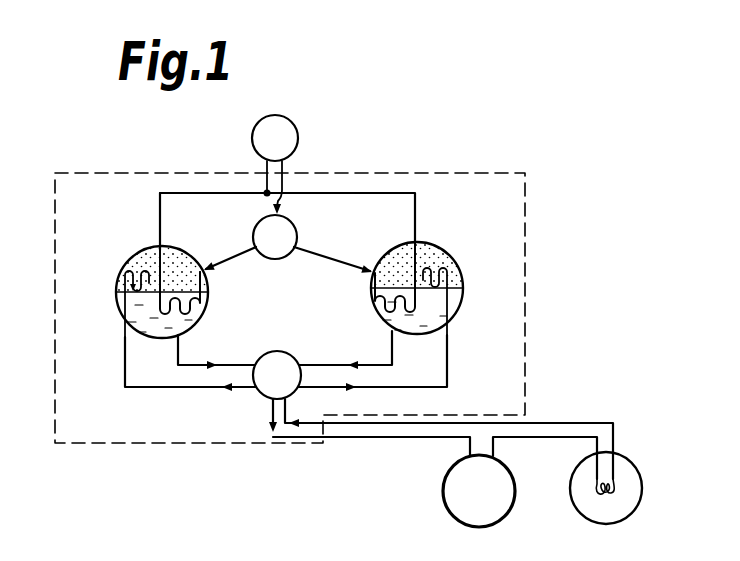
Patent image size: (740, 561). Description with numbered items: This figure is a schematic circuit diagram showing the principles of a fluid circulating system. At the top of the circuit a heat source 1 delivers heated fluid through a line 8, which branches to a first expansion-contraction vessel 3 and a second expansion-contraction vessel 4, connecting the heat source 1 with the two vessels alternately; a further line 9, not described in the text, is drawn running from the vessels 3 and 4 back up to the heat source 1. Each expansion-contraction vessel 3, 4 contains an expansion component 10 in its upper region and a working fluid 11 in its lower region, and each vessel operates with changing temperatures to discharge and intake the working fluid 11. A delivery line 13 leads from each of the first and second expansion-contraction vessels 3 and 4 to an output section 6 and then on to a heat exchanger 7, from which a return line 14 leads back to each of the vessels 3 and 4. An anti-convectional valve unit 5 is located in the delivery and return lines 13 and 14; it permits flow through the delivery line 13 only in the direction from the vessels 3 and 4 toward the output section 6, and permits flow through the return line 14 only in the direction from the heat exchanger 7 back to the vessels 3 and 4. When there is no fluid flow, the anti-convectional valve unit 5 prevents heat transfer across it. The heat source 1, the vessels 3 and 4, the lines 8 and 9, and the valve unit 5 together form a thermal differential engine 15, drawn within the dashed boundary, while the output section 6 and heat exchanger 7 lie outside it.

The heat source 1 is at (286, 120).
The first expansion-contraction vessel 3 is at (103, 298).
The second expansion-contraction vessel 4 is at (465, 296).
The anti-convectional valve unit 5 is at (279, 350).
The output section 6 is at (444, 497).
The heat exchanger 7 is at (572, 498).
The line 8 is at (290, 203).
The return conduit 9 is at (157, 211).
The expansion component 10 is at (126, 258).
The working fluid 11 is at (207, 299).
The delivery line 13 is at (176, 362).
The return line 14 is at (146, 392).
The thermal differential engine 15 is at (530, 273).